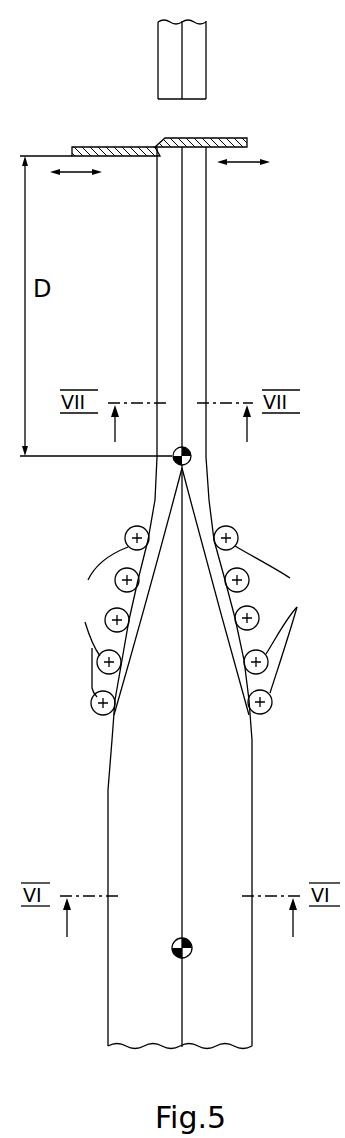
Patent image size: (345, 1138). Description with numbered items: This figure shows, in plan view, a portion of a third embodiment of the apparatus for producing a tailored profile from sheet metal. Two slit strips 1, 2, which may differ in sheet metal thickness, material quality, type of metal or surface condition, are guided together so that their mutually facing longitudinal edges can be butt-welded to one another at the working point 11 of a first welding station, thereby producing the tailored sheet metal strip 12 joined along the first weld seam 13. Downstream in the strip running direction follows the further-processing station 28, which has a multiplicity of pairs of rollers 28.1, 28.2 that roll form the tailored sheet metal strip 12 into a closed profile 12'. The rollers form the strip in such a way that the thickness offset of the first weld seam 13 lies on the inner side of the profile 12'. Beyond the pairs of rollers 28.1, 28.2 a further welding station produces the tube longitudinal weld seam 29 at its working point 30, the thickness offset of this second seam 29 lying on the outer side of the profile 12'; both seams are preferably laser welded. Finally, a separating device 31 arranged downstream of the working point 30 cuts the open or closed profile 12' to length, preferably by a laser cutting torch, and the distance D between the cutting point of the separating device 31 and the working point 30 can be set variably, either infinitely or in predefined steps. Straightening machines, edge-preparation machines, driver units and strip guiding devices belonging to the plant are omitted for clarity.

The slit strip 1 is at (120, 1018).
The slit strip 2 is at (233, 998).
The working point of the welding station 11 is at (173, 952).
The tailored sheet metal strip 12 is at (153, 751).
The closed profile 12' is at (174, 238).
The first weld seam 13 is at (182, 845).
The further-processing station 28 is at (270, 542).
The pair of rollers 28.1 is at (116, 584).
The pair of rollers 28.2 is at (249, 581).
The tube longitudinal weld seam 29 is at (182, 56).
The working point of the further welding station 30 is at (176, 461).
The separating device 31 is at (205, 139).